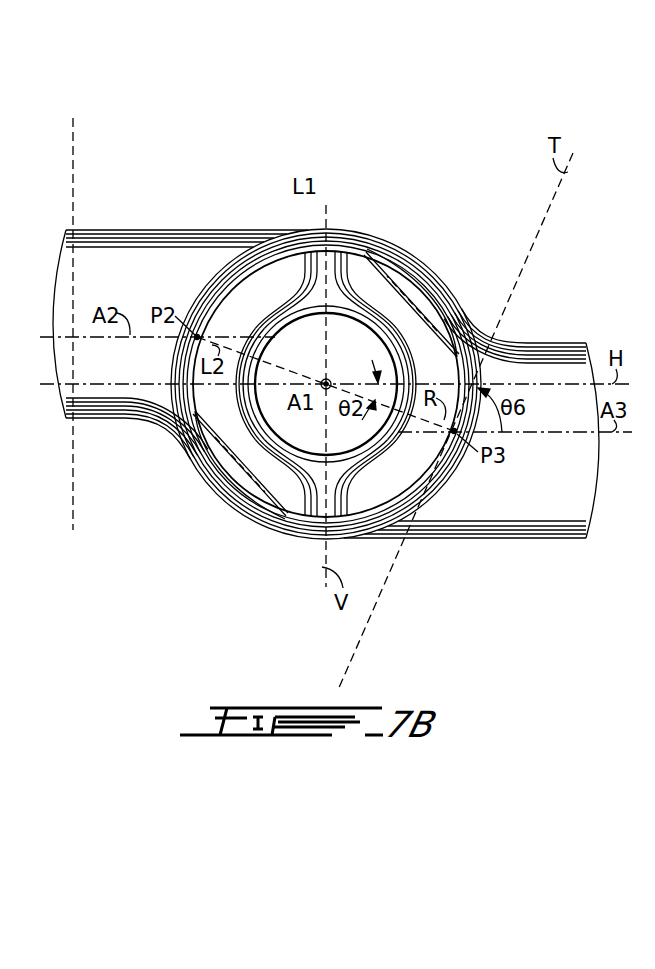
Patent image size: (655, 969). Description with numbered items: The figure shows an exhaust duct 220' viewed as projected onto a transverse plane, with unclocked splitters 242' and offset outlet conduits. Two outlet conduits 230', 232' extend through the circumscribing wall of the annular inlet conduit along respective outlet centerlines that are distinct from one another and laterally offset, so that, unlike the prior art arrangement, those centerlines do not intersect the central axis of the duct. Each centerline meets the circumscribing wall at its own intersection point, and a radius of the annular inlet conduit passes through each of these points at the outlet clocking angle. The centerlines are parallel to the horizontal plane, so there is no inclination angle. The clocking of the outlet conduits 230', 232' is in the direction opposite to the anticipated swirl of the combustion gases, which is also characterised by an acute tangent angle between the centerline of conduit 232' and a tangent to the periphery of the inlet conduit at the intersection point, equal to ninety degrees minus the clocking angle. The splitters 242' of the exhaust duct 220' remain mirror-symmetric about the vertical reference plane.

The exhaust duct 220' is at (326, 286).
The outlet conduit 230' is at (180, 301).
The outlet conduit 232' is at (471, 411).
The splitter 242' is at (331, 384).